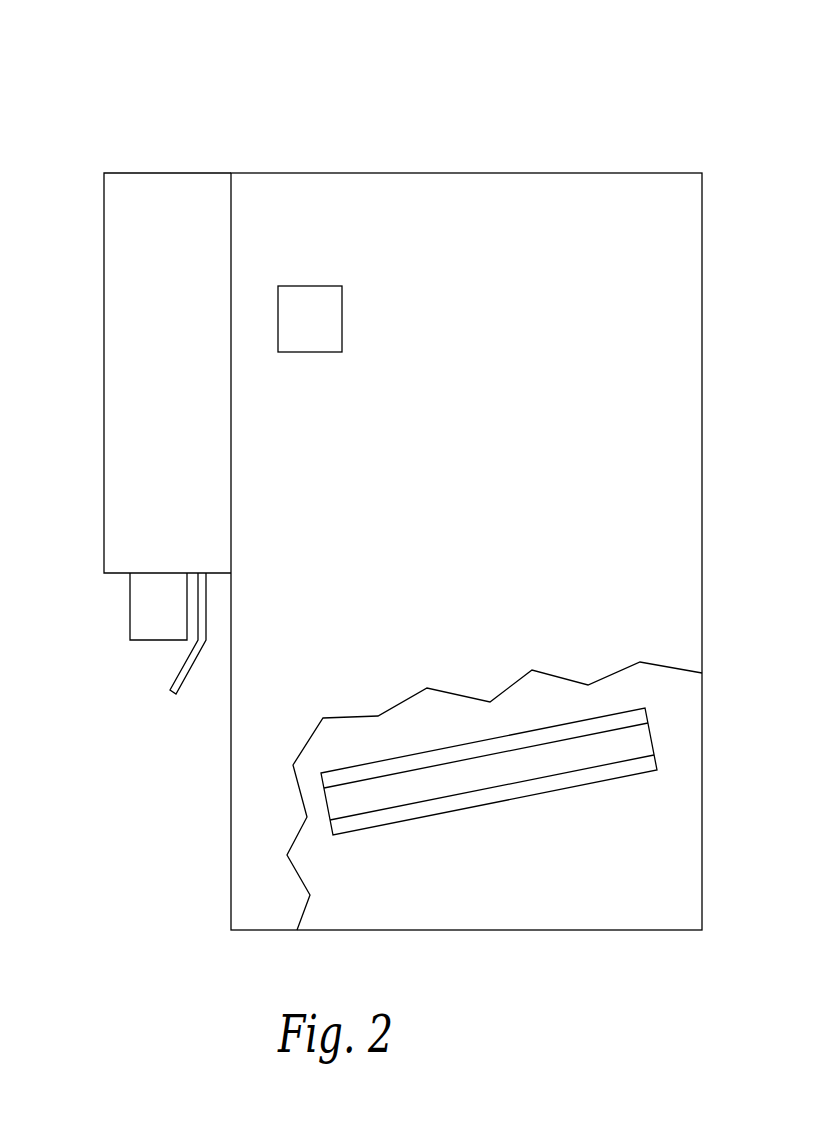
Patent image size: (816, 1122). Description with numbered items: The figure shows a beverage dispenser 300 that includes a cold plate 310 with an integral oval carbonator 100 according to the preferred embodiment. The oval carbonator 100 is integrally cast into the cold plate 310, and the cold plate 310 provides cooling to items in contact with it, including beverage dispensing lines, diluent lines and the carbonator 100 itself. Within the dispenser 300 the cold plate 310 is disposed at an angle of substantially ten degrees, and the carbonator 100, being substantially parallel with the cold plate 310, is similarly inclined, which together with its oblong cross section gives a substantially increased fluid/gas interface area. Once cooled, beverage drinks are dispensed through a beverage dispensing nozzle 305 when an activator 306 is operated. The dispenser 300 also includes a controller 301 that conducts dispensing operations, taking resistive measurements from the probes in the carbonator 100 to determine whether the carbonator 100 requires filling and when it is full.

The beverage dispenser 300 is at (134, 126).
The controller 301 is at (326, 290).
The beverage dispensing nozzle 305 is at (109, 652).
The activator 306 is at (159, 709).
The cold plate 310 is at (541, 806).
The oval carbonator 100 is at (436, 801).